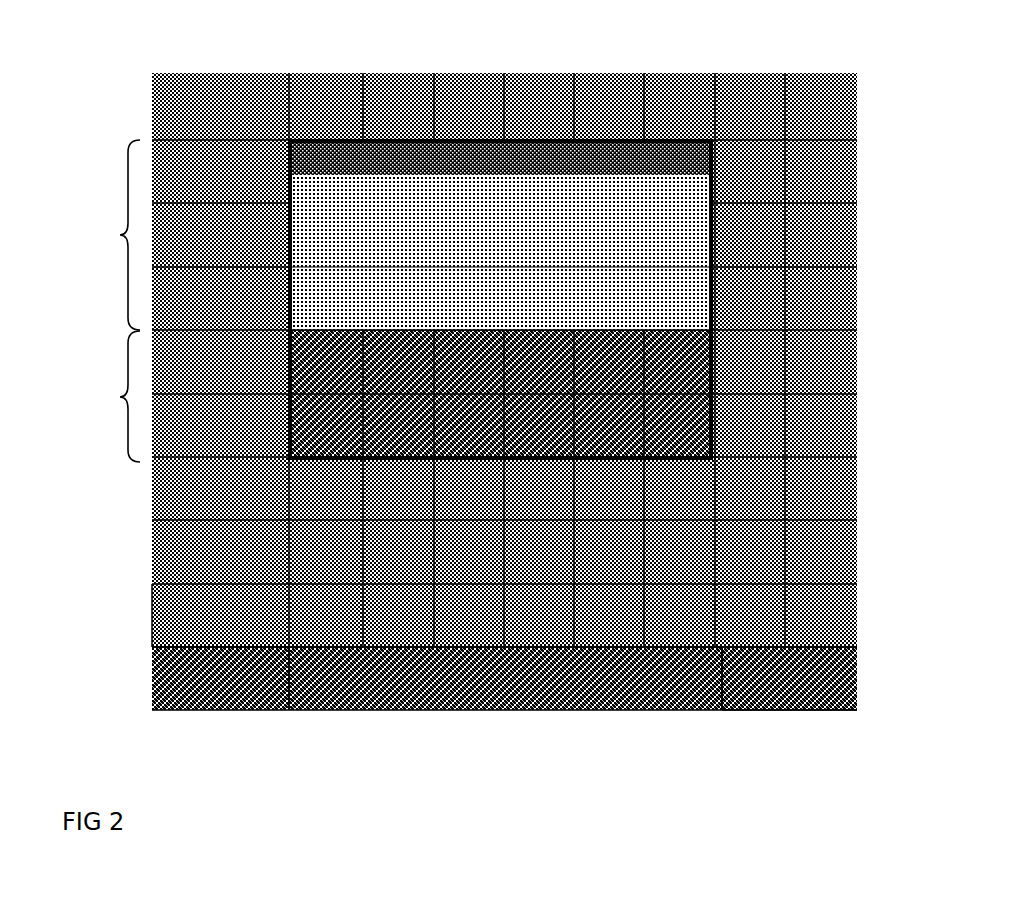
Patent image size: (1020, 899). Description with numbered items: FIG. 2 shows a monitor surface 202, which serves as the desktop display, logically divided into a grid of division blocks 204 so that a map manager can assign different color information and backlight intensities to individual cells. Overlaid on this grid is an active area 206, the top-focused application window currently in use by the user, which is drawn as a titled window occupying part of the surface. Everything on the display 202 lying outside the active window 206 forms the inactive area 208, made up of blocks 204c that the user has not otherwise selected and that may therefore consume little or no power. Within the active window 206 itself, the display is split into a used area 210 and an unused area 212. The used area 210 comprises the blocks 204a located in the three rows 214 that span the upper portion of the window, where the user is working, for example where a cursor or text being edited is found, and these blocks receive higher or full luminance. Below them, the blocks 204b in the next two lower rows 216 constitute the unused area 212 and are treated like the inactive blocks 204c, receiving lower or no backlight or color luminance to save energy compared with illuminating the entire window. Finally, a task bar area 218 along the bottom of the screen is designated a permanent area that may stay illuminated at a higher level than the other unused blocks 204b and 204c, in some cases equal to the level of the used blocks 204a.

The monitor surface 202 is at (318, 712).
The division blocks 204 is at (176, 116).
The used-area blocks 204a is at (612, 195).
The unused-area blocks 204b is at (385, 439).
The inactive-area blocks 204c is at (178, 611).
The active area 206 is at (385, 278).
The inactive area 208 is at (762, 90).
The used area 210 is at (430, 195).
The unused area 212 is at (312, 402).
The three rows 214 is at (107, 235).
The two lower rows 216 is at (107, 396).
The task bar area 218 is at (150, 690).